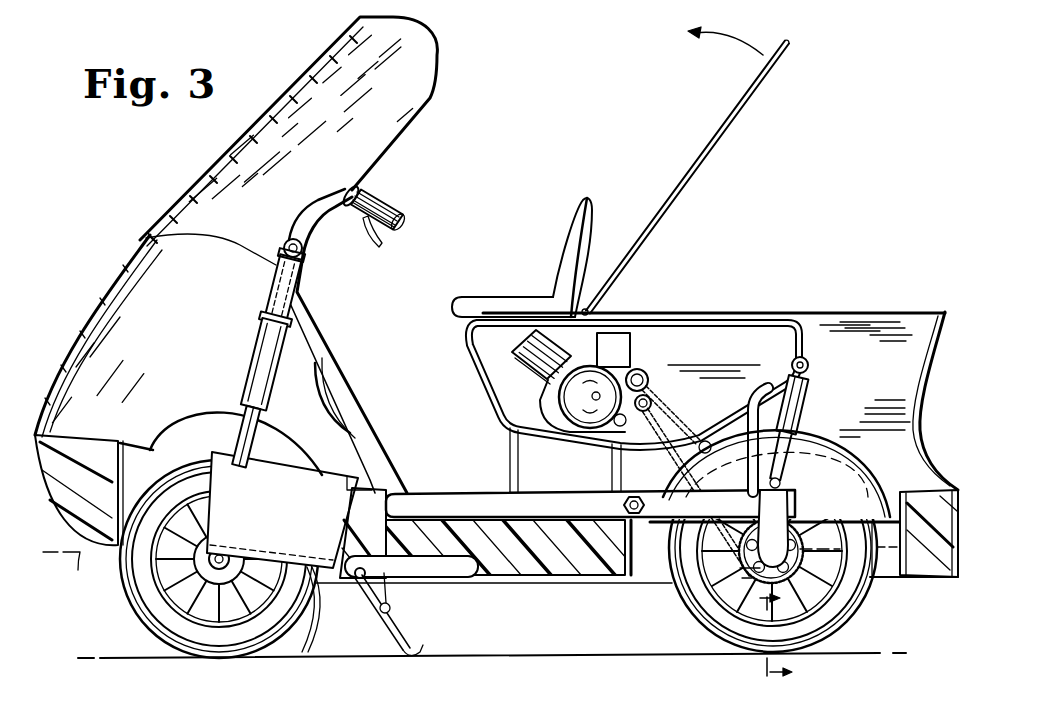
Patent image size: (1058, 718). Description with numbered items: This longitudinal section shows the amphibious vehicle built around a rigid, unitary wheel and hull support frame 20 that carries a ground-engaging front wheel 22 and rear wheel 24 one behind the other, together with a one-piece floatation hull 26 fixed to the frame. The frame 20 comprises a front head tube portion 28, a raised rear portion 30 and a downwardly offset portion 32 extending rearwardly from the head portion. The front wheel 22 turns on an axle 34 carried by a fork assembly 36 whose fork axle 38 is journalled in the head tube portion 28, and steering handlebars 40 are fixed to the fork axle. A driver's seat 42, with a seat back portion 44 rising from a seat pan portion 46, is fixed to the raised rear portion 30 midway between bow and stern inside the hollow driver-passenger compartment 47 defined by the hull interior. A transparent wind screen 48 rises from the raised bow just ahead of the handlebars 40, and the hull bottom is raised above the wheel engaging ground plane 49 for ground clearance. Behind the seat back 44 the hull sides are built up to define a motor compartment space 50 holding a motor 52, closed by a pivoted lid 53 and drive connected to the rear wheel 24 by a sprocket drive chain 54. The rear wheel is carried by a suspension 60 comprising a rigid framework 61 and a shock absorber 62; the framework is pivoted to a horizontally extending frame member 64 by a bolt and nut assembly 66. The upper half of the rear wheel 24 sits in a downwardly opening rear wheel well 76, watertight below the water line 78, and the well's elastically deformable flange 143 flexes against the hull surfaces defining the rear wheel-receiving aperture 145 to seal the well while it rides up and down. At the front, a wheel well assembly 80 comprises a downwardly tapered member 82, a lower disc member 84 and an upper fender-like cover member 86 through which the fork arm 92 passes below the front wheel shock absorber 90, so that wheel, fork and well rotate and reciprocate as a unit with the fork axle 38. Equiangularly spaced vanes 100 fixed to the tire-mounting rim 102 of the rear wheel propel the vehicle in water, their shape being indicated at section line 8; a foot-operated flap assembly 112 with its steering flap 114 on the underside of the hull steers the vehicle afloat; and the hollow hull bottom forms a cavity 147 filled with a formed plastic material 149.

The section line 8- 8 is at (768, 637).
The wheel and hull support frame 20 is at (498, 434).
The front wheel 22 is at (134, 612).
The rear wheel 24 is at (690, 611).
The floatation hull 26 is at (98, 443).
The front head tube portion 28 is at (305, 275).
The raised rear portion 30 is at (485, 318).
The downwardly offset portion 32 is at (443, 493).
The axle 34 is at (229, 556).
The fork assembly 36 is at (246, 350).
The fork axle 38 is at (275, 283).
The steering handlebars 40 is at (345, 186).
The driver's seat 42 is at (543, 261).
The seat back portion 44 is at (585, 222).
The seat pan portion 46 is at (506, 294).
The driver-passenger compartment 47 is at (483, 492).
The transparent wind screen 48 is at (276, 98).
The wheel engaging ground plane 49 is at (538, 655).
The engine or motor compartment space 50 is at (720, 361).
The engine or motor 52 is at (535, 358).
The cover or lid 53 is at (718, 140).
The sprocket drive chain 54 is at (677, 472).
The suspension 60 is at (810, 411).
The rigid framework 61 is at (781, 503).
The shock absorber 62 is at (803, 426).
The frame member 64 is at (743, 512).
The bolt and nut assembly 66 is at (623, 505).
The rear wheel well 76 is at (851, 458).
The water line 78 is at (470, 584).
The front wheel well assembly 80 is at (183, 405).
The downwardly tapered member 82 is at (318, 512).
The lower disc member 84 is at (309, 612).
The upper fender-like cover member 86 is at (227, 417).
The front wheel shock absorbers 90 is at (277, 380).
The fork arm 92 is at (258, 445).
The vanes 100 is at (704, 574).
The tire-mounting rim 102 is at (805, 613).
The flap assembly 112 is at (413, 583).
The steering flap 114 is at (383, 632).
The flange 143 is at (654, 547).
The rear wheel-receiving aperture 145 is at (896, 496).
The cavity 147 is at (568, 567).
The plastic material 149 is at (500, 560).